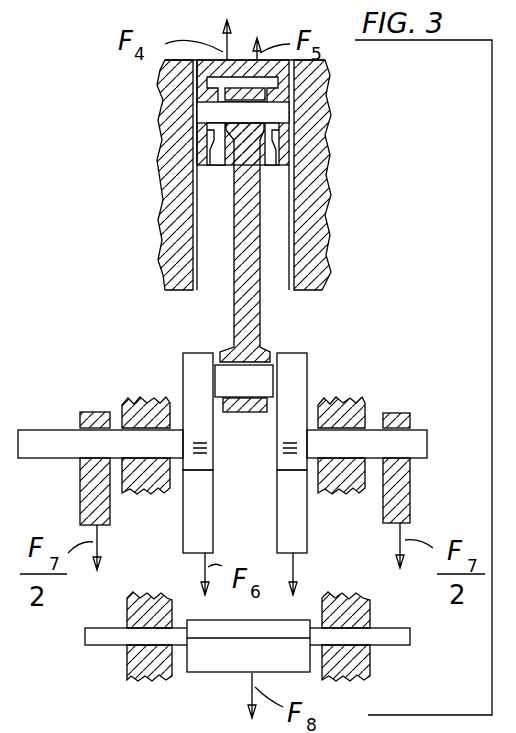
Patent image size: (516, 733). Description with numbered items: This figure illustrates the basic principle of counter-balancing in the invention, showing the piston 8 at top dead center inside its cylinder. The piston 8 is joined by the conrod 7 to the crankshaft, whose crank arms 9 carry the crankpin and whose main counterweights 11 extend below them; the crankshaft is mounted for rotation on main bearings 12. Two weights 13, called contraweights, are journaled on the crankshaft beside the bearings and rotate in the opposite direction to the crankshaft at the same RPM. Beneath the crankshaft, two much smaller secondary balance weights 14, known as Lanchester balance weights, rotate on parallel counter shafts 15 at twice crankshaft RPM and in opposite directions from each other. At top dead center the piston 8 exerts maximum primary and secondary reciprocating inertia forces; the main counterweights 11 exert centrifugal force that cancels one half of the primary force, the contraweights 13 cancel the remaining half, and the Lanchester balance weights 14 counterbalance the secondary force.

The conrod 7 is at (233, 309).
The piston 8 is at (206, 153).
The crank arms 9 is at (187, 369).
The main counterweights 11 is at (190, 522).
The main bearings 12 is at (134, 397).
The weights (contraweights) 13 is at (93, 491).
The secondary balance weights (Lanchester balance weights) 14 is at (207, 665).
The counter shafts 15 is at (400, 638).